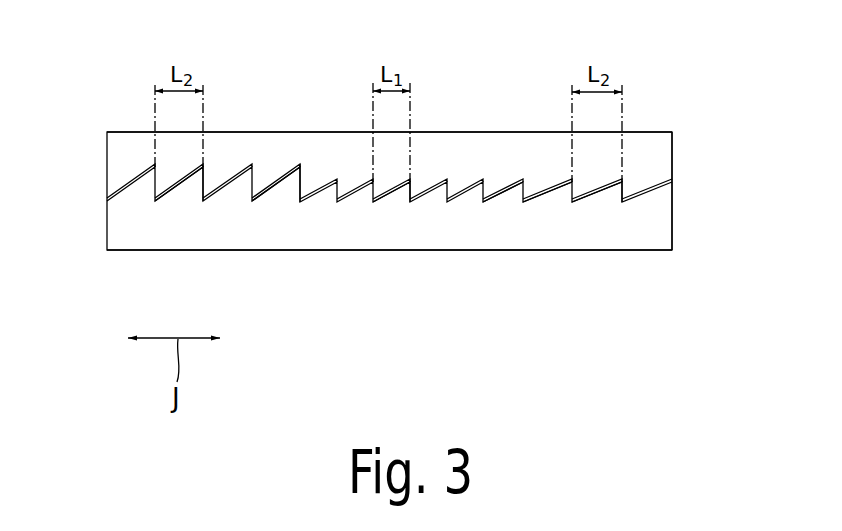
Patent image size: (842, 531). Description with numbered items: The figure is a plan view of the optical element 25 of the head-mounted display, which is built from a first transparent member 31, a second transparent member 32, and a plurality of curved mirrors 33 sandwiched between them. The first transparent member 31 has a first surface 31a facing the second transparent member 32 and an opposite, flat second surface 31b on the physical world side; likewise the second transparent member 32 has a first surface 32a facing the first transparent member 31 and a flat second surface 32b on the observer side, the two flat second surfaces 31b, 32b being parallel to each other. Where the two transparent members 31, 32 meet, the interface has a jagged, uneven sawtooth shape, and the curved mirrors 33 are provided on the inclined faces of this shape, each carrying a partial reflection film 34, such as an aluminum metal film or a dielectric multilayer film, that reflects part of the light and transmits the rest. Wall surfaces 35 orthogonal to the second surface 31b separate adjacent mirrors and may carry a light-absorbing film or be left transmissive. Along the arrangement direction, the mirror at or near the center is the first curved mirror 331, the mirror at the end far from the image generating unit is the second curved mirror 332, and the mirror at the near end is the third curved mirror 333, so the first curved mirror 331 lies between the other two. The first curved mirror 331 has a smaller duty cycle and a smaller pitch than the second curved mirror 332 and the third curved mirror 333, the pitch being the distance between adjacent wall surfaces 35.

The optical element 25 is at (485, 88).
The first transparent member 31 is at (459, 155).
The first surface 31a is at (552, 182).
The second surface 31b is at (656, 132).
The second transparent member 32 is at (530, 227).
The first surface 32a is at (506, 197).
The second surface 32b is at (668, 251).
The curved mirrors 33 is at (389, 236).
The first curved mirror 331 is at (393, 212).
The second curved mirror 332 is at (184, 202).
The third curved mirror 333 is at (595, 212).
The partial reflection film 34 is at (274, 186).
The wall surfaces 35 is at (300, 185).